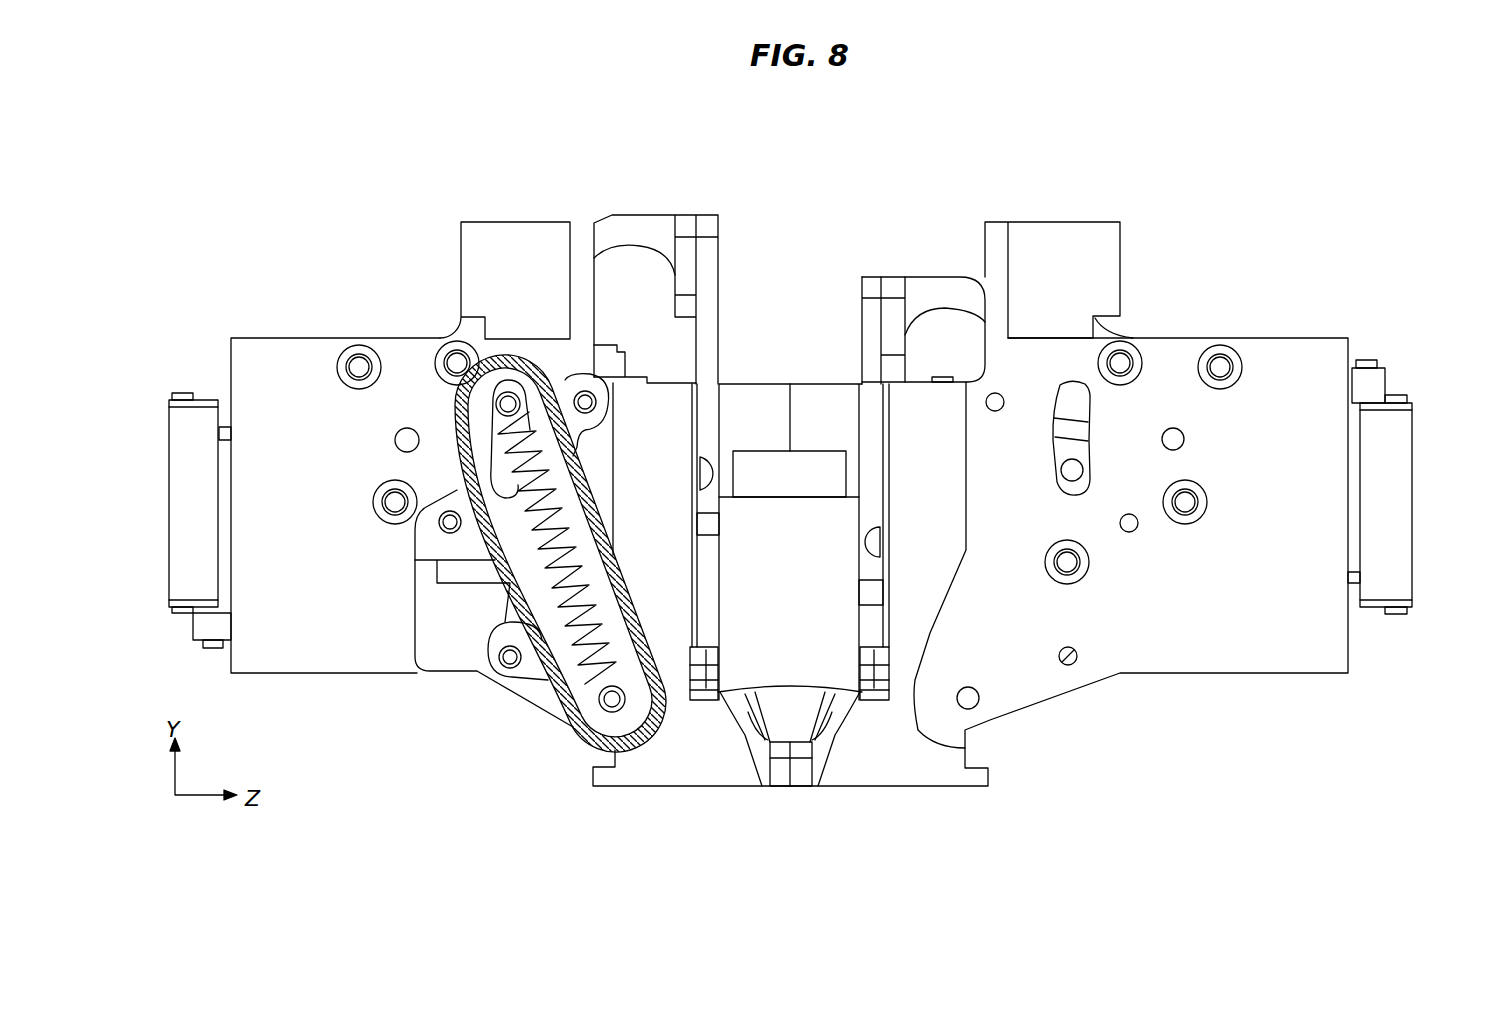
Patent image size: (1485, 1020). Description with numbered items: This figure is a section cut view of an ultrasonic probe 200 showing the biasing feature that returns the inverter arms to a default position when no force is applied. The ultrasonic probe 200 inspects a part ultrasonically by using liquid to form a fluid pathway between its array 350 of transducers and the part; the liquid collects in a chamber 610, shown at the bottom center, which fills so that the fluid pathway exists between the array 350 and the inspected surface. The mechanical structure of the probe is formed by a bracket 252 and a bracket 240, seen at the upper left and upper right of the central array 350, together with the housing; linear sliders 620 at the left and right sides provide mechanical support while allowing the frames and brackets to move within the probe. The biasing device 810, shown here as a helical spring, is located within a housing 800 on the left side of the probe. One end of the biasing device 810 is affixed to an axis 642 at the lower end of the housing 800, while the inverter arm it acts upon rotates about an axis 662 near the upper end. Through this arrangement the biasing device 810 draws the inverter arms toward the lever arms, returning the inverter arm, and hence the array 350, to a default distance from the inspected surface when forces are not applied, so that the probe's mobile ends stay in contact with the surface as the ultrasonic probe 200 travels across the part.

The ultrasonic probe 200 is at (1249, 222).
The bracket 240 is at (895, 277).
The bracket 252 is at (649, 215).
The array 350 is at (803, 582).
The chamber 610 is at (797, 757).
The linear sliders 620 is at (182, 488).
The axis 642 is at (655, 733).
The axis 662 is at (510, 400).
The housing 800 is at (580, 737).
The biasing device 810 is at (605, 578).